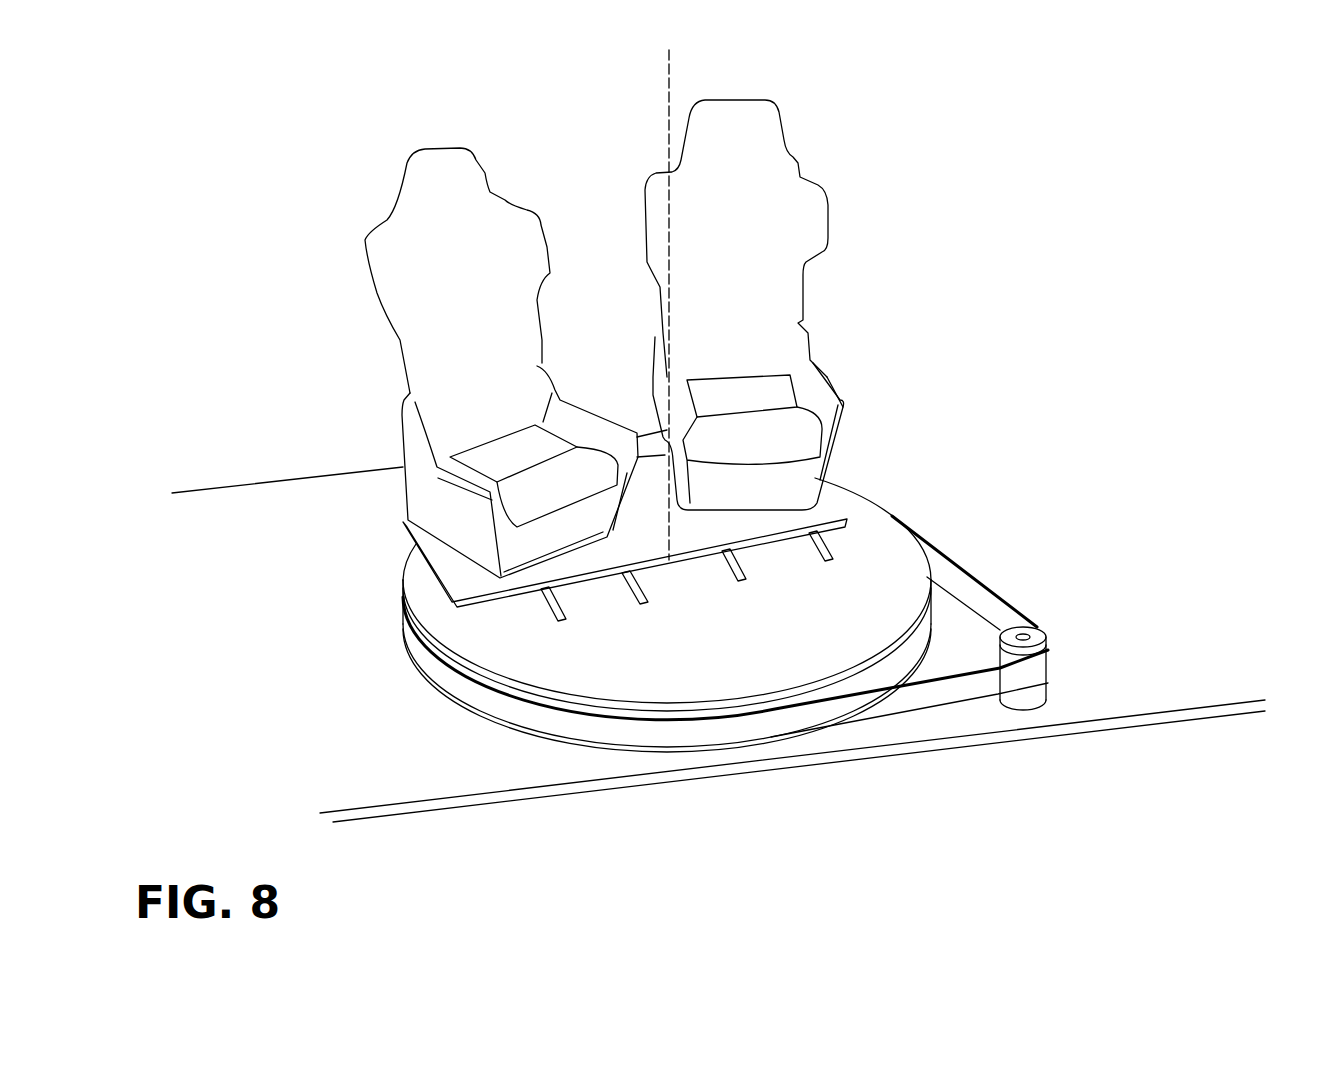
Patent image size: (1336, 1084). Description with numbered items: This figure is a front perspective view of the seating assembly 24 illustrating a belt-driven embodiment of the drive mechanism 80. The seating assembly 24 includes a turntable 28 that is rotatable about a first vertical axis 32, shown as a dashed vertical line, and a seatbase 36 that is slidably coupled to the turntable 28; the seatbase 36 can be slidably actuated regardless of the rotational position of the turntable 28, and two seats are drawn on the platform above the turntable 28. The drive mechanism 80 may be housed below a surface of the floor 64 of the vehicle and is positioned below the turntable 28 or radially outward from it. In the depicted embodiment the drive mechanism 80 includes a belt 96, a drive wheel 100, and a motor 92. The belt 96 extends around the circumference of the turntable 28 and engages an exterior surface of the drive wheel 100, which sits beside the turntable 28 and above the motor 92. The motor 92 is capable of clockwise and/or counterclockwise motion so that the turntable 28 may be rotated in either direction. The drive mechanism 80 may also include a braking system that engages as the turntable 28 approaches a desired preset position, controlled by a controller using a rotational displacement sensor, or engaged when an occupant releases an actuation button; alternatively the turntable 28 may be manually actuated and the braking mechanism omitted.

The seating assembly 24 is at (335, 190).
The turntable 28 is at (893, 563).
The first vertical axis 32 is at (668, 108).
The seatbase 36 is at (427, 497).
The floor 64 is at (322, 503).
The drive mechanism 80 is at (1043, 623).
The motor 92 is at (1030, 707).
The belt 96 is at (977, 593).
The drive wheel 100 is at (1008, 660).